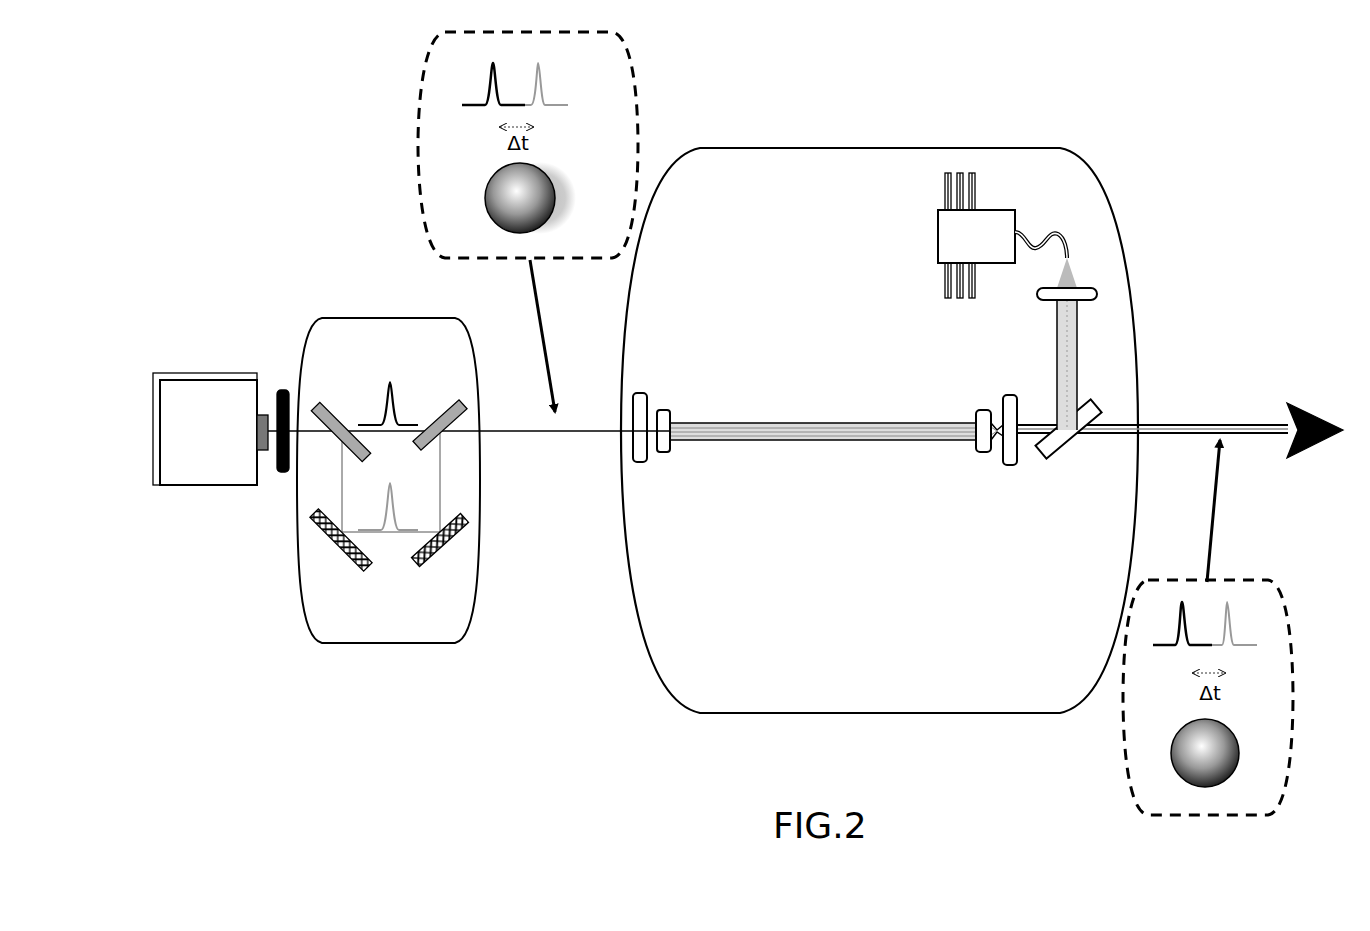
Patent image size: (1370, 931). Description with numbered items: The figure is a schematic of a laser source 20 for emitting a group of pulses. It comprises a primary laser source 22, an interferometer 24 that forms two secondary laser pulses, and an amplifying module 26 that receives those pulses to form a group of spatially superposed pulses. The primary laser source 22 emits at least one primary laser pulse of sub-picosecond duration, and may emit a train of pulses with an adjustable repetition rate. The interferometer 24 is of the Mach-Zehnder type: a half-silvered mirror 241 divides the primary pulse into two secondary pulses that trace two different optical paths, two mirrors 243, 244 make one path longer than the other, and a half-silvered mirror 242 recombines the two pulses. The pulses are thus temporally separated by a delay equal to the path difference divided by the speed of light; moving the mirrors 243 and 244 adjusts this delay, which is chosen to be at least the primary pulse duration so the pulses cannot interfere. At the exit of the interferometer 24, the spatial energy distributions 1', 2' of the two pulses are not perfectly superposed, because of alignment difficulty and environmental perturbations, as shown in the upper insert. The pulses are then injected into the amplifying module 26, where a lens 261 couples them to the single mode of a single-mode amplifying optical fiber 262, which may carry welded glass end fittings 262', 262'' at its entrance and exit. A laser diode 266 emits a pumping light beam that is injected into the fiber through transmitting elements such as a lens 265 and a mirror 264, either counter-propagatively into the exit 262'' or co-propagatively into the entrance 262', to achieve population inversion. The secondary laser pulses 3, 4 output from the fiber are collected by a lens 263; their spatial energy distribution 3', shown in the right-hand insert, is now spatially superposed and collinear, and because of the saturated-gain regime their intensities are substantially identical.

The laser source 20 is at (1197, 118).
The primary laser source 22 is at (221, 429).
The interferometer 24 is at (362, 645).
The half-silvered mirror 241 is at (332, 409).
The half-silvered mirror 242 is at (428, 413).
The mirror 243 is at (327, 550).
The mirror 244 is at (443, 553).
The spatial energy distribution of secondary laser pulse 1' is at (493, 198).
The spatial energy distribution of secondary laser pulse 2' is at (563, 197).
The secondary laser pulse 3 is at (1174, 623).
The secondary laser pulse 4 is at (1233, 610).
The spatial energy distribution of secondary laser pulses 3' is at (1224, 753).
The amplifying module 26 is at (875, 715).
The lens 261 is at (648, 396).
The single-mode amplifying optical fiber 262 is at (836, 459).
The glass end fitting 262' is at (701, 409).
The glass end fitting 262'' is at (955, 462).
The lens 263 is at (1010, 467).
The mirror 264 is at (1057, 462).
The lens 265 is at (1037, 297).
The laser diode 266 is at (1002, 235).